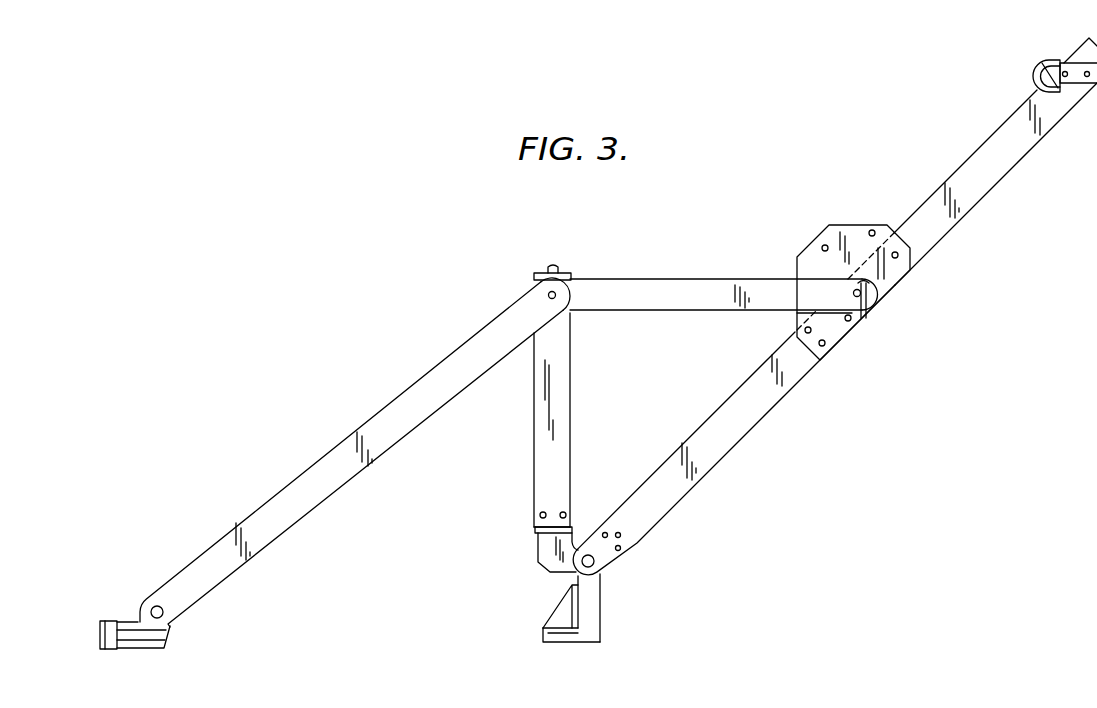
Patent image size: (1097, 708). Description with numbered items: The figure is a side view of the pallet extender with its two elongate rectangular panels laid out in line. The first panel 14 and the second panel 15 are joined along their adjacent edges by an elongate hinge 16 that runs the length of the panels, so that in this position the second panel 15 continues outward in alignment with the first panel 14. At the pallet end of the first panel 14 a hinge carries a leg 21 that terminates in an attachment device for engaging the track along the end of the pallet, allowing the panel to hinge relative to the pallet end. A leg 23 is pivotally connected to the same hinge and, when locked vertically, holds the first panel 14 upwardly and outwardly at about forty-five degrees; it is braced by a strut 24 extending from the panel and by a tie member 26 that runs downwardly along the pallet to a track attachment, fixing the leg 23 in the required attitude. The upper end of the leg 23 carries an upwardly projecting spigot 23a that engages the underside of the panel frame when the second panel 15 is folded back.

The first panel 14 is at (738, 430).
The second panel 15 is at (992, 177).
The elongate hinge 16 is at (889, 296).
The leg 21 is at (586, 616).
The leg 23 is at (540, 448).
The spigot 23a is at (548, 266).
The strut 24 is at (708, 292).
The tie member 26 is at (345, 441).